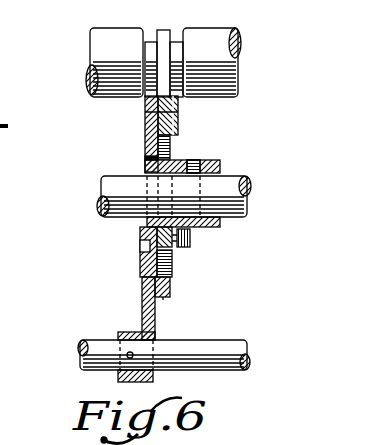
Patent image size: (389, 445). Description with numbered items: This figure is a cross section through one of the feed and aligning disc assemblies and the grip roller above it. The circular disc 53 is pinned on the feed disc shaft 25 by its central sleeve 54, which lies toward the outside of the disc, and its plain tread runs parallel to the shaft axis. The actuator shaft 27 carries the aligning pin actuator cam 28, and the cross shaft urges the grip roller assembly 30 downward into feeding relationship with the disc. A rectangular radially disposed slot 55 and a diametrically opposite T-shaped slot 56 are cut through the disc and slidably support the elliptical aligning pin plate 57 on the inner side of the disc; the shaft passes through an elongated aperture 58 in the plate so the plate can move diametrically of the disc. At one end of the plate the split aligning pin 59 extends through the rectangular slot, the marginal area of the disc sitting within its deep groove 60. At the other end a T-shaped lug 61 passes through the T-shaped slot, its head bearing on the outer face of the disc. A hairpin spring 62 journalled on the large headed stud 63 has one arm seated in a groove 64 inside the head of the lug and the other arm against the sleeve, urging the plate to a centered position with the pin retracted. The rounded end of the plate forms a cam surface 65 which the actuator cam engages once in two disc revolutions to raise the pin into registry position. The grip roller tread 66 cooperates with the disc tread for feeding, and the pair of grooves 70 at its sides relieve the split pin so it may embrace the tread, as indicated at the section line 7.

The section line 7- 7 is at (276, 16).
The feed disc shaft 25 is at (237, 180).
The actuator shaft 27 is at (200, 330).
The aligning pin actuator cam 28 is at (139, 306).
The grip roller assembly 30 is at (85, 53).
The circular disc 53 is at (166, 300).
The sleeve 54 is at (212, 162).
The rectangular radially disposed slot 55 is at (170, 146).
The T-shaped radially disposed slot 56 is at (172, 288).
The aligning pin plate 57 is at (146, 137).
The elongated aperture 58 is at (146, 168).
The split aligning pin 59 is at (179, 102).
The groove 60 is at (145, 120).
The T-shaped lug 61 is at (172, 262).
The hairpin spring 62 is at (140, 232).
The large headed stud 63 is at (191, 236).
The groove 64 is at (168, 243).
The cam surface 65 is at (140, 268).
The tread 66 is at (163, 36).
The groove 70 is at (150, 42).